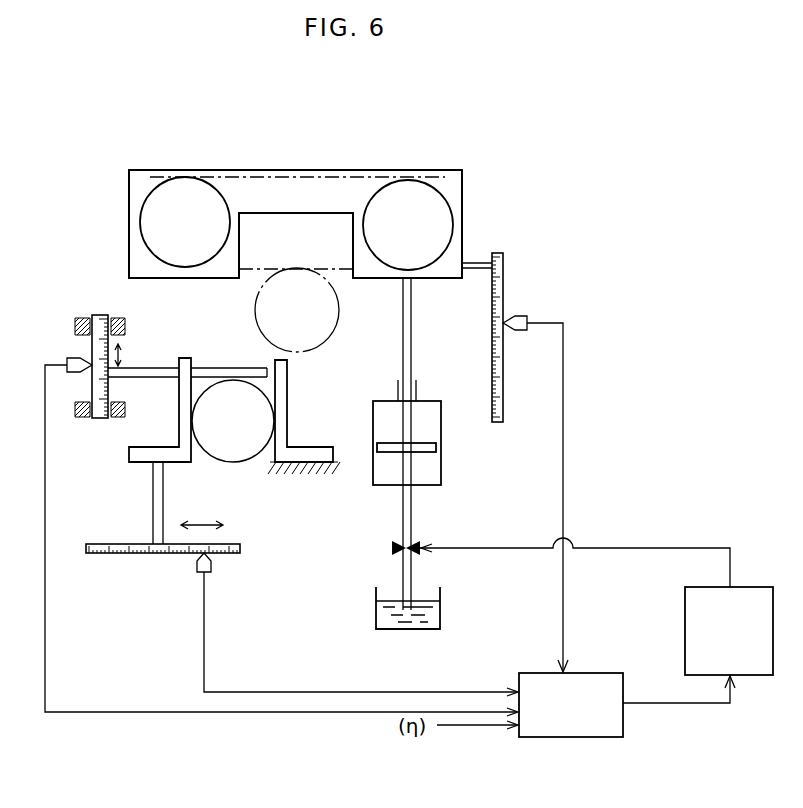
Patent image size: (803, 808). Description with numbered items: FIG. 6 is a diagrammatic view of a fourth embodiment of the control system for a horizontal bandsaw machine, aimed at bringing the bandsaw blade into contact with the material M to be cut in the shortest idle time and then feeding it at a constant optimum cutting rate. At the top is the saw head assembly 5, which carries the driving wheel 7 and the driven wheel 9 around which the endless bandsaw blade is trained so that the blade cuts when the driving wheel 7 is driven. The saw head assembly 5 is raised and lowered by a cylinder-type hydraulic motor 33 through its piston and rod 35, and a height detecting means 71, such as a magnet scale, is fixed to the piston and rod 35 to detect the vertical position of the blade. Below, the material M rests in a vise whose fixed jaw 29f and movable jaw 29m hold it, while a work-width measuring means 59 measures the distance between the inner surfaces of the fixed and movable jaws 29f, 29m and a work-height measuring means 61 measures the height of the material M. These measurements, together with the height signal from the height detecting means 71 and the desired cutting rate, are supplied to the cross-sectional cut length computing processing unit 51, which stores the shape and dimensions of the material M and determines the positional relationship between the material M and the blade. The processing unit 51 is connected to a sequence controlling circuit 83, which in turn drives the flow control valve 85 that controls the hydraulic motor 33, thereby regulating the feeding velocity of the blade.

The saw head assembly 5 is at (322, 166).
The driven wheel 9 is at (140, 222).
The driving wheel 7 is at (450, 213).
The material to be cut M is at (295, 267).
The piston and rod 35 is at (402, 353).
The hydraulic motor 33 is at (436, 478).
The flow control valve 85 is at (392, 548).
The height detecting means 71 is at (514, 296).
The work-height measuring means 61 is at (62, 328).
The fixed jaw 29f is at (183, 424).
The movable jaw 29m is at (283, 424).
The work-width measuring means 59 is at (151, 565).
The cross-sectional cut length computing processing unit 51 is at (586, 705).
The sequence controlling circuit 83 is at (729, 631).